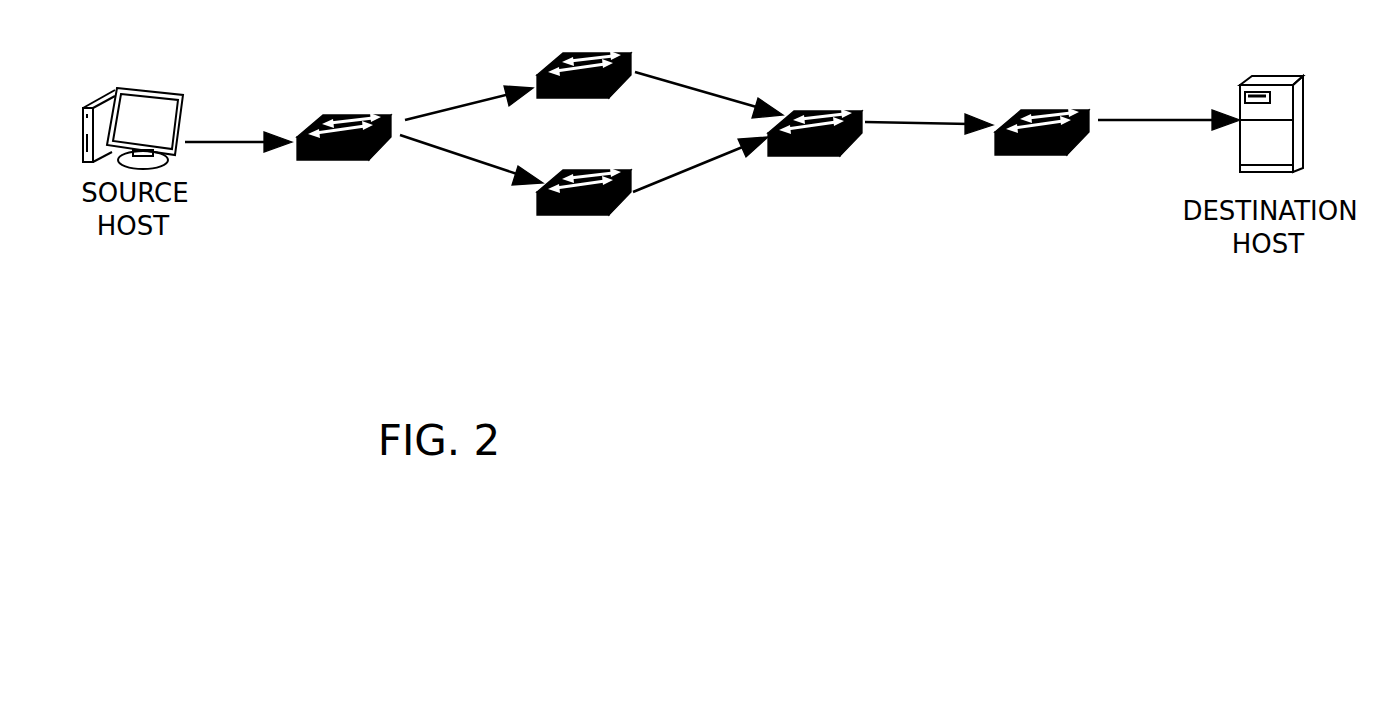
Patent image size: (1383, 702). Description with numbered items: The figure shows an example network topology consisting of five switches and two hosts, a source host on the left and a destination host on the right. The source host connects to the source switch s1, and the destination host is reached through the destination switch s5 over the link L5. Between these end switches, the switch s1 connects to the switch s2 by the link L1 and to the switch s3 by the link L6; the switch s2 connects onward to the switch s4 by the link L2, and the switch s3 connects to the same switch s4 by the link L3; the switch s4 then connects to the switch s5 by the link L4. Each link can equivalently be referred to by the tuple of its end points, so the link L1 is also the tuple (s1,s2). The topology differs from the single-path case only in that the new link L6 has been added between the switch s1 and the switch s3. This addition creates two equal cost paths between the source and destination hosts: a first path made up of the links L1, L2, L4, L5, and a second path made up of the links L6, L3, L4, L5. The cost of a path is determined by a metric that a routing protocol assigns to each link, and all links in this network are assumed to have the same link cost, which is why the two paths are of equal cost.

The source switch s1 is at (344, 119).
The switch s2 is at (584, 56).
The switch s3 is at (584, 174).
The switch s4 is at (815, 115).
The destination switch s5 is at (1042, 109).
The link L1 is at (469, 90).
The link L2 is at (709, 84).
The link L3 is at (700, 172).
The link L4 is at (929, 107).
The link L5 is at (1169, 109).
The new link L6 is at (471, 170).